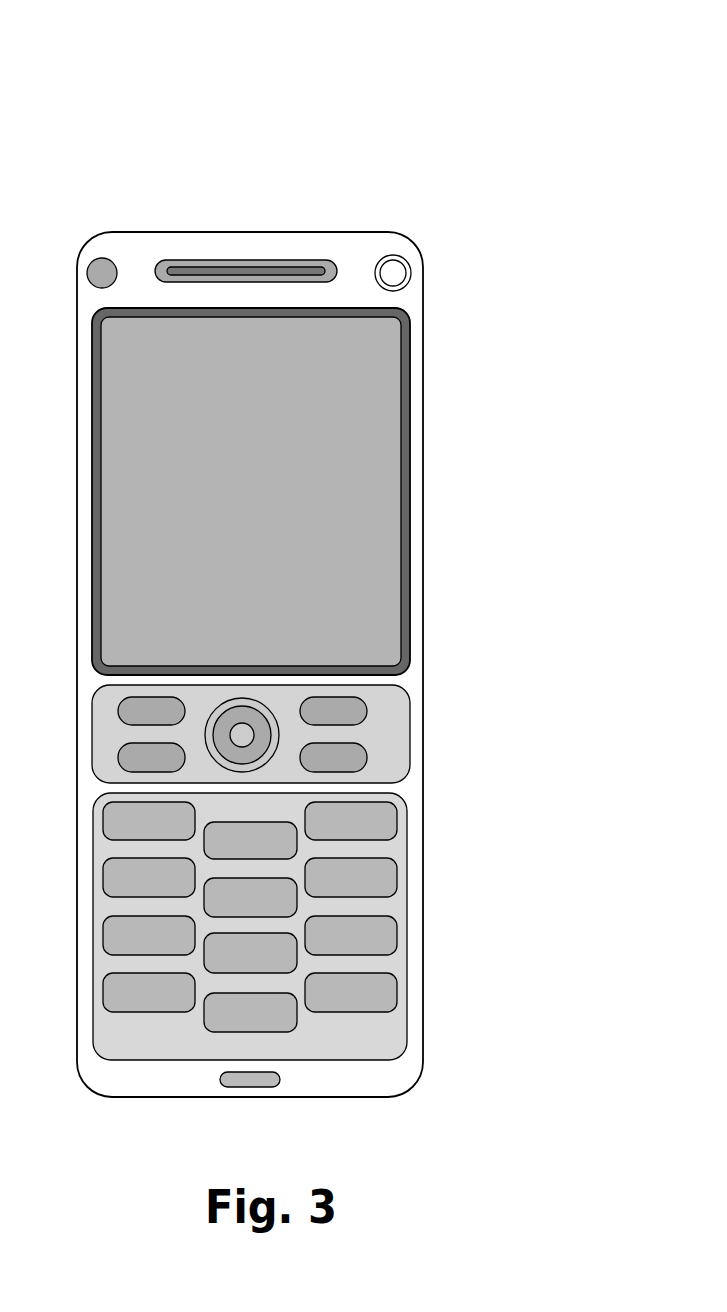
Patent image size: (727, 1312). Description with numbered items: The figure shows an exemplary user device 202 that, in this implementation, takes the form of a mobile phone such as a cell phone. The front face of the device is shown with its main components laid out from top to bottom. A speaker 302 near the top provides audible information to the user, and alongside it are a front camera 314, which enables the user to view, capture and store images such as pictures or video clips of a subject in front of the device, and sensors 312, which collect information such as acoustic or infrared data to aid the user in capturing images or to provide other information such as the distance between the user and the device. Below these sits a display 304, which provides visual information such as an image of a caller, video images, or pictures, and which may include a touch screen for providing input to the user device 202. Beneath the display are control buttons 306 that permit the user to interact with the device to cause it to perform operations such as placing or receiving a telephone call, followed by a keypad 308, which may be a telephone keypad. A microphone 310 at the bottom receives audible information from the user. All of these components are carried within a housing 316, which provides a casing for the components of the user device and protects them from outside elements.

The user device 202 is at (240, 120).
The speaker 302 is at (247, 260).
The display 304 is at (364, 308).
The control buttons 306 is at (410, 733).
The keypad 308 is at (407, 927).
The microphone 310 is at (280, 1078).
The sensors 312 is at (411, 274).
The front camera 314 is at (101, 258).
The housing 316 is at (423, 983).